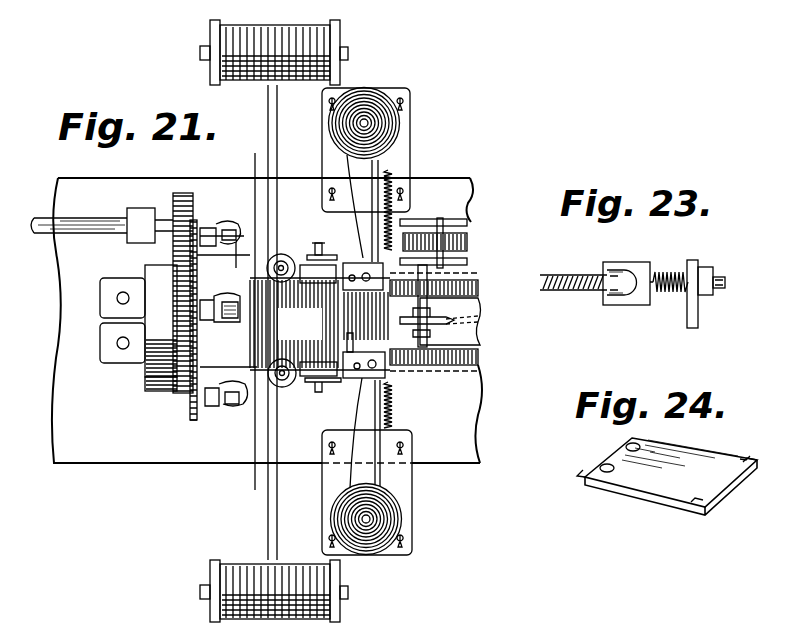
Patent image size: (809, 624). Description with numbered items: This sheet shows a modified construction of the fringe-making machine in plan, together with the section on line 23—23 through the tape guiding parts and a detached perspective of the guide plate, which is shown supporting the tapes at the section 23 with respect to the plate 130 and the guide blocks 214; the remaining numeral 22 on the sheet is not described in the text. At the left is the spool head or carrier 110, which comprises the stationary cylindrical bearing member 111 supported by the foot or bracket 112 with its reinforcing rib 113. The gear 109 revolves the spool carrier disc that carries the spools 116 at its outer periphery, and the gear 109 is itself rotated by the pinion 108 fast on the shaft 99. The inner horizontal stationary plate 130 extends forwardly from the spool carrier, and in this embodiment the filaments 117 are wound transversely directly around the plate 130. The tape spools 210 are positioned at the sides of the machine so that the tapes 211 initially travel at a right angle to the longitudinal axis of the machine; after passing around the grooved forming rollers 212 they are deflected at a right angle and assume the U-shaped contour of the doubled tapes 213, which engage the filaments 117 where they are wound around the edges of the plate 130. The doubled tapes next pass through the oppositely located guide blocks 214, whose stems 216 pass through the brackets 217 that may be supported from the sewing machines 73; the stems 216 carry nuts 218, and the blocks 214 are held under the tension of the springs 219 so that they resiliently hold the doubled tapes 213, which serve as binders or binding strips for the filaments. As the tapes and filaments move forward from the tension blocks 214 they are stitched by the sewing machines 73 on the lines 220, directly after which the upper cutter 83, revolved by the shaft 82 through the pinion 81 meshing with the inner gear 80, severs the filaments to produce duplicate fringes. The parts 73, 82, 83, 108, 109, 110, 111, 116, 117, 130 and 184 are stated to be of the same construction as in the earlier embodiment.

In FIG. 21, the tape spool 210 is at (318, 52).
In FIG. 21, the tape 211 is at (268, 103).
In FIG. 21, the plate 22 is at (240, 321).
In FIG. 21, the pinion 108 is at (188, 170).
In FIG. 21, the shaft 99 is at (78, 210).
In FIG. 21, the spool head or carrier 110 is at (210, 230).
In FIG. 21, the filament 117 is at (284, 254).
In FIG. 23, the filament 117 is at (560, 275).
In FIG. 21, the plate 130 is at (338, 268).
In FIG. 23, the plate 130 is at (609, 284).
In FIG. 24, the plate 130 is at (667, 476).
In FIG. 21, the foot or bracket 112 is at (112, 286).
In FIG. 21, the reinforcing rib 113 is at (145, 320).
In FIG. 21, the stationary cylindrical bearing member 111 is at (160, 332).
In FIG. 21, the gear 109 is at (172, 385).
In FIG. 21, the spool 116 is at (212, 400).
In FIG. 21, the grooved forming roller 212 is at (300, 385).
In FIG. 21, the spring 219 is at (308, 393).
In FIG. 23, the spring 219 is at (670, 293).
In FIG. 21, the nut 218 is at (312, 400).
In FIG. 23, the nut 218 is at (706, 250).
In FIG. 21, the stem 216 is at (318, 408).
In FIG. 23, the stem 216 is at (716, 276).
In FIG. 21, the drum 23 is at (316, 434).
In FIG. 21, the sewing machine 73 is at (398, 134).
In FIG. 21, the bracket 217 is at (393, 196).
In FIG. 23, the bracket 217 is at (700, 302).
In FIG. 21, the guide block 214 is at (386, 226).
In FIG. 23, the guide block 214 is at (636, 300).
In FIG. 21, the pinion 81 is at (440, 233).
In FIG. 21, the inner gear 80 is at (458, 234).
In FIG. 21, the shaft 82 is at (468, 244).
In FIG. 21, the stitching line 220 is at (478, 273).
In FIG. 21, the doubled tape 213 is at (478, 288).
In FIG. 23, the doubled tape 213 is at (628, 276).
In FIG. 21, the housing 184 is at (458, 313).
In FIG. 21, the upper cutter 83 is at (440, 330).